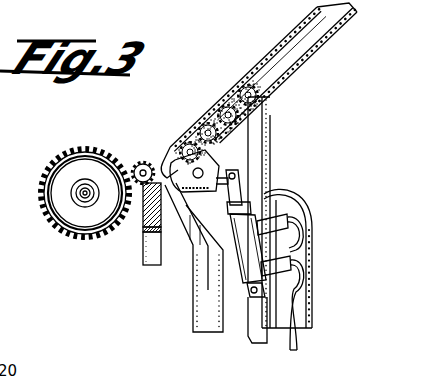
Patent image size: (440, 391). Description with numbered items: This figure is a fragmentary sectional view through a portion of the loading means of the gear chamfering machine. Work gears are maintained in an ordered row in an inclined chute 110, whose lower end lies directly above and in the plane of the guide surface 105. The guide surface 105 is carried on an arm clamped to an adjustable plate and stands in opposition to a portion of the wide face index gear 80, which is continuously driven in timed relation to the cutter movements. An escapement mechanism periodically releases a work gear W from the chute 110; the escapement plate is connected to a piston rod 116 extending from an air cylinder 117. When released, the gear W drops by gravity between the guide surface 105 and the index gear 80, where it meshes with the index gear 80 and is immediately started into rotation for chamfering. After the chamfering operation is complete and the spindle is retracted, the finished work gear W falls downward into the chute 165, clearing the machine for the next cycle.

The inclined chute 110 is at (285, 78).
The index gear 80 is at (70, 153).
The work gear W is at (145, 160).
The guide surface 105 is at (143, 227).
The chute 165 is at (176, 238).
The air cylinder 117 is at (233, 228).
The piston rod 116 is at (243, 205).